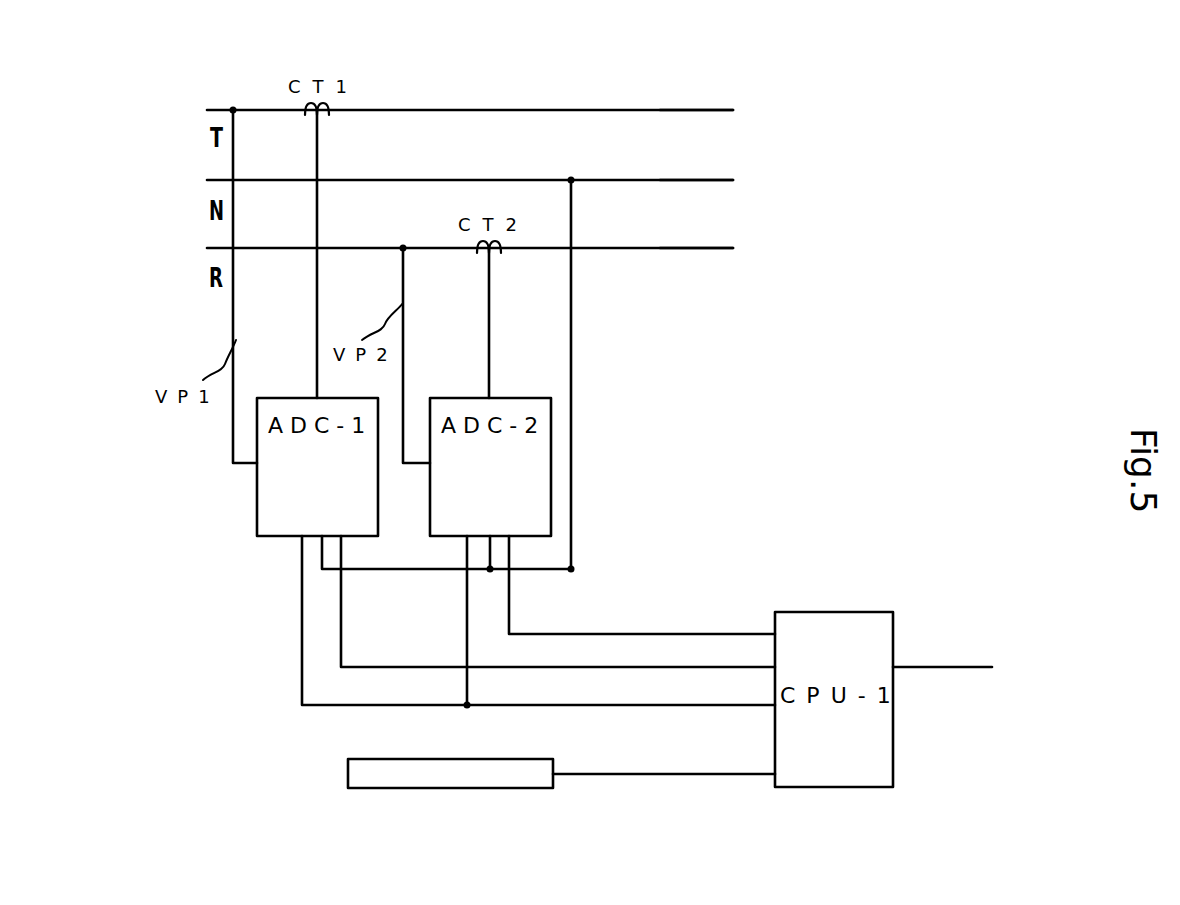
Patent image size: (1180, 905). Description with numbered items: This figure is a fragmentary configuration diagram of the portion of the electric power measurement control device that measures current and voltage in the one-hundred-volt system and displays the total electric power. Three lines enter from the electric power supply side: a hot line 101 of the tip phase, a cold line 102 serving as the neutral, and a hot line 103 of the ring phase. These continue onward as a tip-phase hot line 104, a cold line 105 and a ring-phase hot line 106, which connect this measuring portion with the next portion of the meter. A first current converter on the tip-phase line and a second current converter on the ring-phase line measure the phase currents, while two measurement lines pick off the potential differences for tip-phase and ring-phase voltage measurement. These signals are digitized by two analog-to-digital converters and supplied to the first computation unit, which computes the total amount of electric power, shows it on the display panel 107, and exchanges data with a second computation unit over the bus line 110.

The hot line (tip phase: T) from an electric power supply side 101 is at (435, 114).
The cold line from the electric power supply side: N 102 is at (435, 184).
The hot line (ring phase: R) from the electric power supply side 103 is at (435, 252).
The hot line (tip phase) connecting 151 with 152 104 is at (667, 108).
The cold line connecting 151 with 152 105 is at (667, 178).
The hot line (ring phase) connecting 151 with 152 106 is at (667, 246).
The panel for displaying the amount of electric power 107 is at (535, 787).
The bus line for data sending-receiving between CPU-1 and CPU-2 110 is at (908, 663).